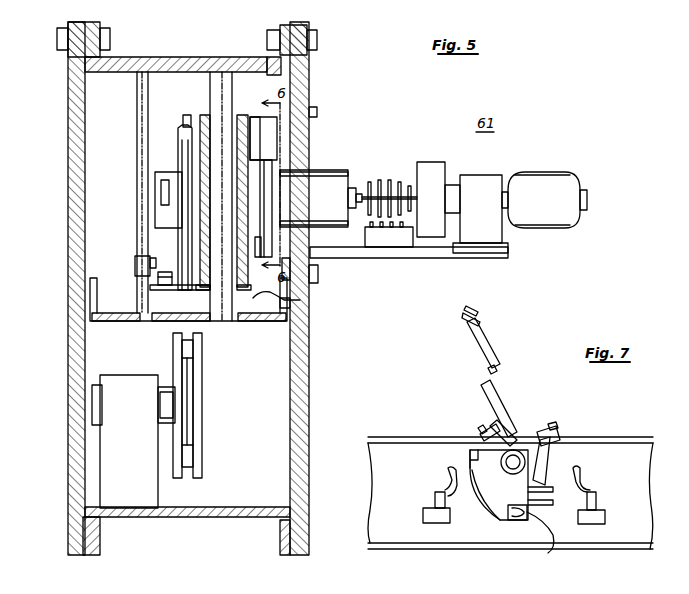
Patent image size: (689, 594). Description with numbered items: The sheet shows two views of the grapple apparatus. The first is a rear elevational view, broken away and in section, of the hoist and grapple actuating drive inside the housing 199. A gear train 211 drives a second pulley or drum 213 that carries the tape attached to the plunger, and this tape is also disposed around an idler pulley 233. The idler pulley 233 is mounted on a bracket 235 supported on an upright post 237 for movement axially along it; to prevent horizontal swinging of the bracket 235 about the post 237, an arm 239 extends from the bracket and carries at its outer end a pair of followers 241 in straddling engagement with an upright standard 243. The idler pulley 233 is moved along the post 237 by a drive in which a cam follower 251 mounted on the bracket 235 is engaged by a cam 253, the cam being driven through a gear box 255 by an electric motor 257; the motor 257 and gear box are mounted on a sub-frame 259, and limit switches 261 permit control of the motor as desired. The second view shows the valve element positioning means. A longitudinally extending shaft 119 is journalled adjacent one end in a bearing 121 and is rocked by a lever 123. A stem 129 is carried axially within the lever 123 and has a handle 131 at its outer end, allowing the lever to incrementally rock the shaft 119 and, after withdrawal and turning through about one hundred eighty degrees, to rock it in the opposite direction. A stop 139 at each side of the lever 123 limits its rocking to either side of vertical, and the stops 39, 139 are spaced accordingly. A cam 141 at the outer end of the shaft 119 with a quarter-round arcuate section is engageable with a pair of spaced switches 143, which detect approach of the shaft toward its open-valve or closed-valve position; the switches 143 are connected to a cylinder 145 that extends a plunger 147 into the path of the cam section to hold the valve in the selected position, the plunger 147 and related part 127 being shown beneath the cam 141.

In FIG. 5, the housing 199 is at (300, 400).
In FIG. 5, the gear train 211 is at (133, 445).
In FIG. 5, the second pulley or drum 213 is at (198, 418).
In FIG. 5, the idler pulley 233 is at (184, 143).
In FIG. 5, the bracket 235 is at (300, 300).
In FIG. 5, the upright post 237 is at (224, 82).
In FIG. 5, the arm 239 is at (180, 290).
In FIG. 5, the followers 241 is at (135, 264).
In FIG. 5, the upright standard 243 is at (137, 146).
In FIG. 5, the cam follower 251 is at (272, 125).
In FIG. 5, the cam 253 is at (300, 158).
In FIG. 5, the gear box 255 is at (432, 170).
In FIG. 5, the electric motor 257 is at (553, 178).
In FIG. 5, the sub-frame 259 is at (447, 262).
In FIG. 5, the limit switches 261 is at (392, 247).
In FIG. 7, the shaft 119 is at (518, 455).
In FIG. 7, the bearing 121 is at (560, 470).
In FIG. 7, the lever 123 is at (497, 349).
In FIG. 7, the cam 127 is at (483, 519).
In FIG. 7, the stem 129 is at (500, 370).
In FIG. 7, the handle 131 is at (480, 318).
In FIG. 7, the stop 139 is at (480, 425).
In FIG. 7, the bracket 39 is at (556, 440).
In FIG. 7, the cam 141 is at (480, 466).
In FIG. 7, the switches 143 is at (435, 500).
In FIG. 7, the cylinder 145 is at (549, 553).
In FIG. 7, the plunger 147 is at (512, 522).